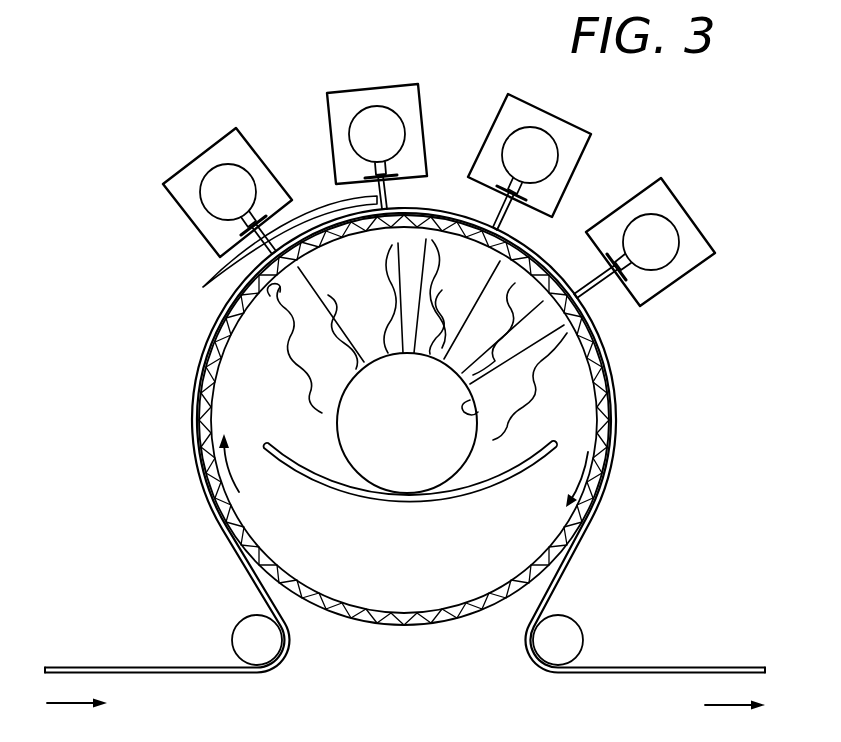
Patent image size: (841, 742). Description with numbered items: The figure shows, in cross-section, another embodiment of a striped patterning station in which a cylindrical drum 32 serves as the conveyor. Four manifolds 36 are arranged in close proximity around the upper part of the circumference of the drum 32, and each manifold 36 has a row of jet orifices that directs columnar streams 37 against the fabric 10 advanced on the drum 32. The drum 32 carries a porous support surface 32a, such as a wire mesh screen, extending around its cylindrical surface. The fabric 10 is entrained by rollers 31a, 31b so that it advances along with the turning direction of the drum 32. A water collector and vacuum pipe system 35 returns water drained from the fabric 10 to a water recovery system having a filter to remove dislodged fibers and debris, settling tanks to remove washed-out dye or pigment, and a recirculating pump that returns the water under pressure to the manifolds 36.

The fabric 10 is at (72, 666).
The roller 31a is at (243, 636).
The roller 31b is at (570, 648).
The cylindrical drum 32 is at (420, 565).
The porous support surface 32a is at (395, 623).
The water collector and vacuum pipe system 35 is at (471, 481).
The manifold 36 is at (635, 195).
The columnar stream 37 is at (275, 252).